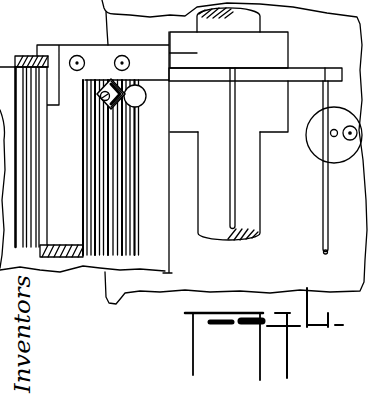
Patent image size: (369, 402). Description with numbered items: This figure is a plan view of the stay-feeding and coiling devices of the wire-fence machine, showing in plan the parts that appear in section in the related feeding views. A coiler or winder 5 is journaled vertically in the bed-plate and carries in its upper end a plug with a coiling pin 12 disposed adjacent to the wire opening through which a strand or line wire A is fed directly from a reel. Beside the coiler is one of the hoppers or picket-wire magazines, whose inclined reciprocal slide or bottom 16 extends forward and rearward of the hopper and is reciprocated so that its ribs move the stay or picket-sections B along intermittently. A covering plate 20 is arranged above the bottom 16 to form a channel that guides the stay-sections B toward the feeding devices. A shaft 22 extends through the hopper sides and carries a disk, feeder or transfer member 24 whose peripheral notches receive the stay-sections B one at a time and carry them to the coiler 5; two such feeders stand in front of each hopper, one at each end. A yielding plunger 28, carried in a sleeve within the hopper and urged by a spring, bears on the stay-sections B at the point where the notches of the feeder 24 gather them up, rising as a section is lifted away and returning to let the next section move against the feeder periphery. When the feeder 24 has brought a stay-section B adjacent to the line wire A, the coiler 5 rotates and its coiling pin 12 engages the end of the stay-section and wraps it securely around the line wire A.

The coiler or winder 5 is at (309, 150).
The coiling pin 12 is at (347, 143).
The inclined reciprocal slide or bottom 16 is at (98, 152).
The covering plate 20 is at (61, 228).
The shaft 22 is at (246, 219).
The disk, feeder or transfer member 24 is at (272, 52).
The yielding plunger 28 is at (101, 95).
The strand or line wire A is at (331, 137).
The stay or picket-section B is at (118, 137).